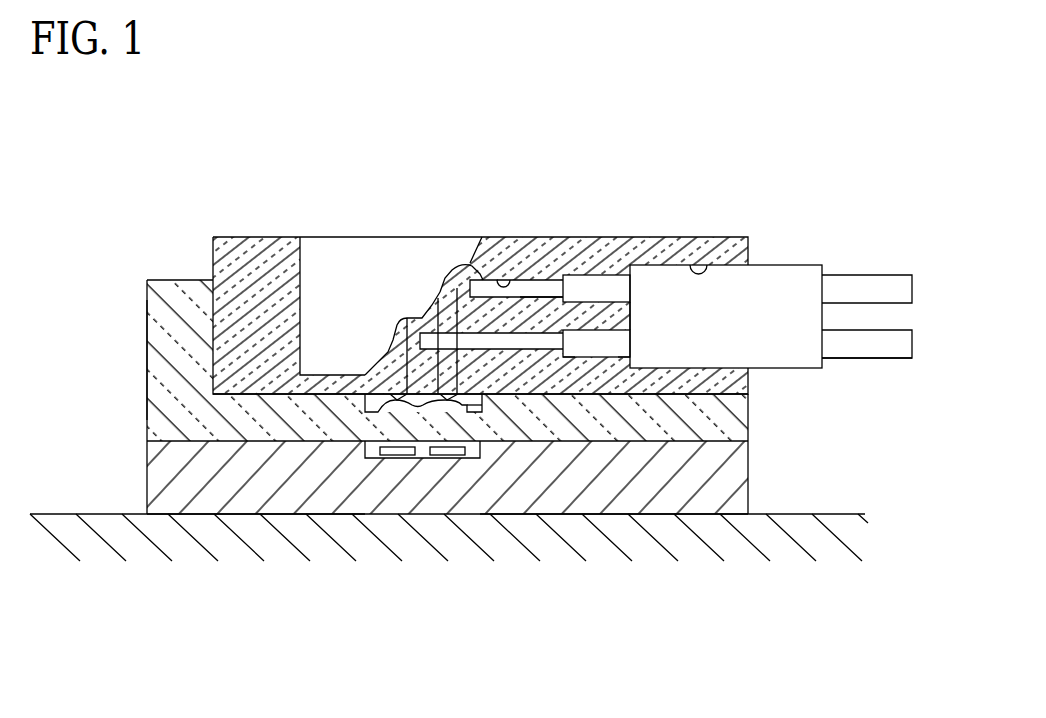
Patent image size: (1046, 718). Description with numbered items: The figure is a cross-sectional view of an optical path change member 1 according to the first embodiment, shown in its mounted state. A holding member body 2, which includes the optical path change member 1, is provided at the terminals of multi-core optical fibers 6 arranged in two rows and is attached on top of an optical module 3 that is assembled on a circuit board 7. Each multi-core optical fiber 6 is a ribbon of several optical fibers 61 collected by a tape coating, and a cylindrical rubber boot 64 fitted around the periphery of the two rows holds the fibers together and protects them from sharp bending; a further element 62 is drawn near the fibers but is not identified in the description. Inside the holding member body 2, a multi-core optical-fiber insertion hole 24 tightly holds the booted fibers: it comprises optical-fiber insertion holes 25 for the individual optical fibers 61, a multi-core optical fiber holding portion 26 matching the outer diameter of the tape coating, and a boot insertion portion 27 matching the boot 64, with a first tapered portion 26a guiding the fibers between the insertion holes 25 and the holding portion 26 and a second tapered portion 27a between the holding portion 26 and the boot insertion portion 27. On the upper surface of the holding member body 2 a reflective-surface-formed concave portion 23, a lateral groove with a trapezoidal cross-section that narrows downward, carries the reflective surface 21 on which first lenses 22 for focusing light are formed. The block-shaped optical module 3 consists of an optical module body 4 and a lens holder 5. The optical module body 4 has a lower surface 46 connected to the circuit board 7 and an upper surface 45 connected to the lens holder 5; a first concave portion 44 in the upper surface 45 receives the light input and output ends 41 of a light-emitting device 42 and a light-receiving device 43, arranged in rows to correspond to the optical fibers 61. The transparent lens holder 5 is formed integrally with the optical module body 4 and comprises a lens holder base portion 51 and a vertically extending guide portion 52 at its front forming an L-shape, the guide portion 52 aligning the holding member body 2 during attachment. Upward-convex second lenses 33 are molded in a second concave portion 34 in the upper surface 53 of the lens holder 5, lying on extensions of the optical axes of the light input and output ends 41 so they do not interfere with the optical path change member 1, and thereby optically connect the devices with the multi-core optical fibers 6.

The optical path change member 1 is at (463, 393).
The holding member body 2 is at (672, 250).
The reflective surface 21 is at (467, 267).
The first lenses 22 is at (450, 278).
The reflective-surface-formed concave portion 23 is at (357, 282).
The multi-core optical-fiber insertion hole 24 is at (628, 326).
The optical-fiber insertion hole 25 is at (505, 278).
The multi-core optical fiber holding portion 26 is at (592, 278).
The first tapered portion 26a is at (570, 357).
The boot insertion portion 27 is at (708, 267).
The second tapered portion 27a is at (630, 360).
The second lens 33 is at (482, 412).
The second concave portion 34 is at (365, 402).
The optical module 3 is at (47, 408).
The optical module body 4 is at (167, 473).
The light input and output end 41 is at (423, 557).
The light-emitting device 42 is at (397, 447).
The light-receiving device 43 is at (443, 450).
The first concave portion 44 is at (480, 453).
The upper surface 45 is at (185, 432).
The lower surface 46 is at (170, 514).
The lens holder 5 is at (130, 403).
The lens holder base portion 51 is at (717, 415).
The guide portion 52 is at (185, 323).
The upper surface 53 is at (722, 446).
The multi-core optical fiber 6 is at (866, 262).
The optical fiber 61 is at (527, 289).
The wire connection portion 62 is at (600, 287).
The boot 64 is at (767, 297).
The circuit board 7 is at (826, 514).